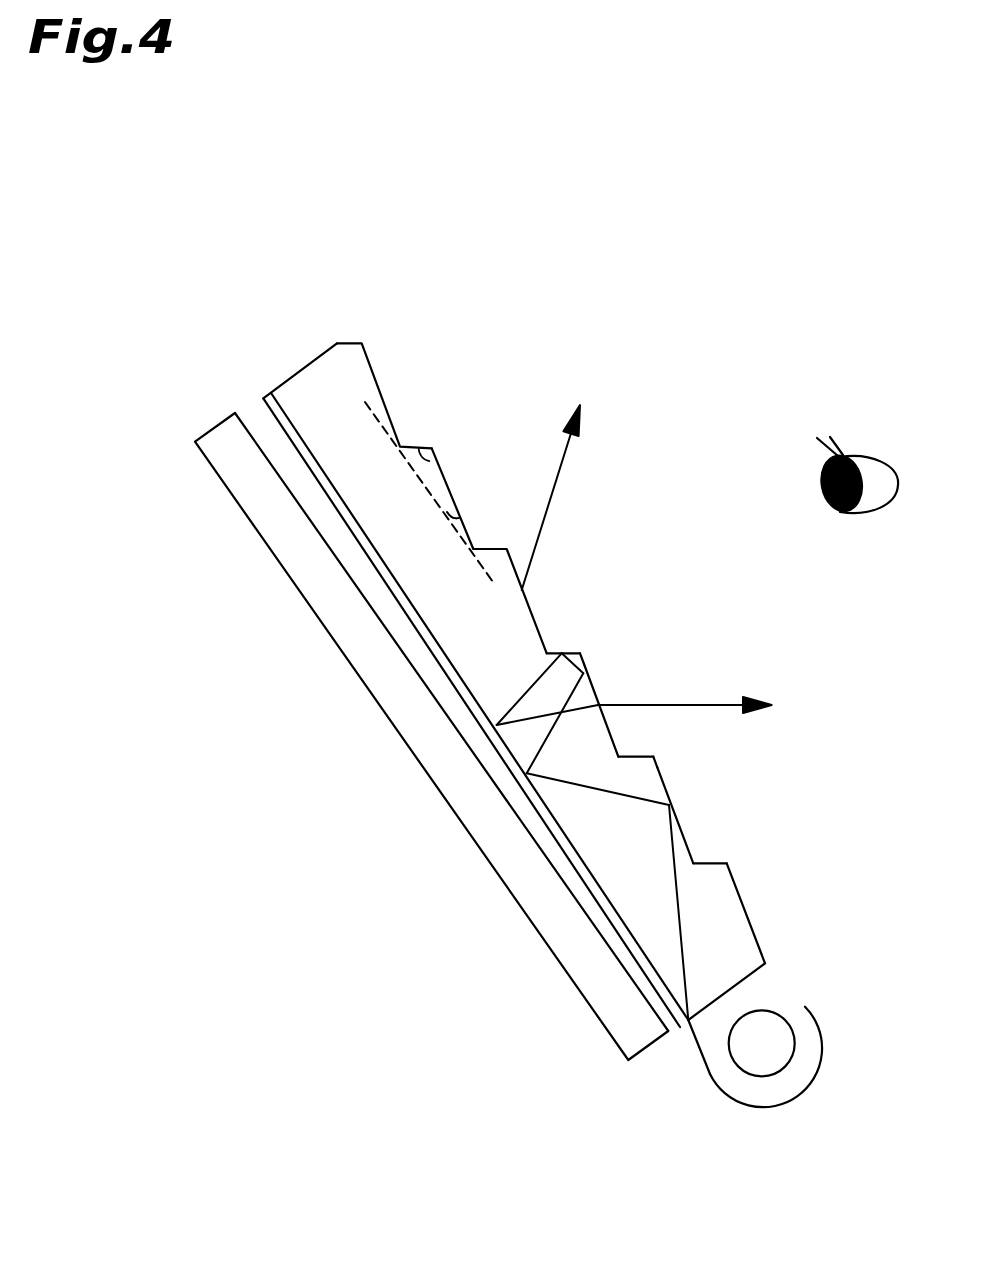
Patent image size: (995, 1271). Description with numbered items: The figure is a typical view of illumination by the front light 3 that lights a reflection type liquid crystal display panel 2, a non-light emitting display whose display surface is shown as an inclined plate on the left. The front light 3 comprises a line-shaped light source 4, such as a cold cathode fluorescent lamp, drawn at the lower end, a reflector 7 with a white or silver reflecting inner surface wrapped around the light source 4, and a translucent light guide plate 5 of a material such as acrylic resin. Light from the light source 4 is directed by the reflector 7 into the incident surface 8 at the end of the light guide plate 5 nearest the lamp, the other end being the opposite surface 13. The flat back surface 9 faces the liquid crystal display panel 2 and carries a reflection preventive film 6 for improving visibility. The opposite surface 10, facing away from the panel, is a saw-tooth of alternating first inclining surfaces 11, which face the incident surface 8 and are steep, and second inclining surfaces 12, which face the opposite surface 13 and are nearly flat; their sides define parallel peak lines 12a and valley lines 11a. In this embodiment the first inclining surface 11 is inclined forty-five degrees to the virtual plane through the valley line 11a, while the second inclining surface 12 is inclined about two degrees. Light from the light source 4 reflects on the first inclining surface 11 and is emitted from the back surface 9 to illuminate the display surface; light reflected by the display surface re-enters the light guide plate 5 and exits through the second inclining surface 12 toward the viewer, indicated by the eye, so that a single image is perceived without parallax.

The reflection type liquid crystal display panel 2 is at (471, 835).
The front light 3 is at (770, 962).
The line-shaped light source 4 is at (710, 1076).
The light guide plate 5 is at (348, 363).
The reflection preventive film 6 is at (262, 400).
The reflector 7 is at (746, 1106).
The incident surface 8 is at (752, 978).
The back surface 9 is at (303, 438).
The opposite surface 10 is at (415, 402).
The first inclining surface 11 is at (562, 655).
The valley line 11a is at (620, 757).
The second inclining surface 12 is at (593, 688).
The peak line 12a is at (581, 655).
The opposite surface to the incident surface 13 is at (297, 368).